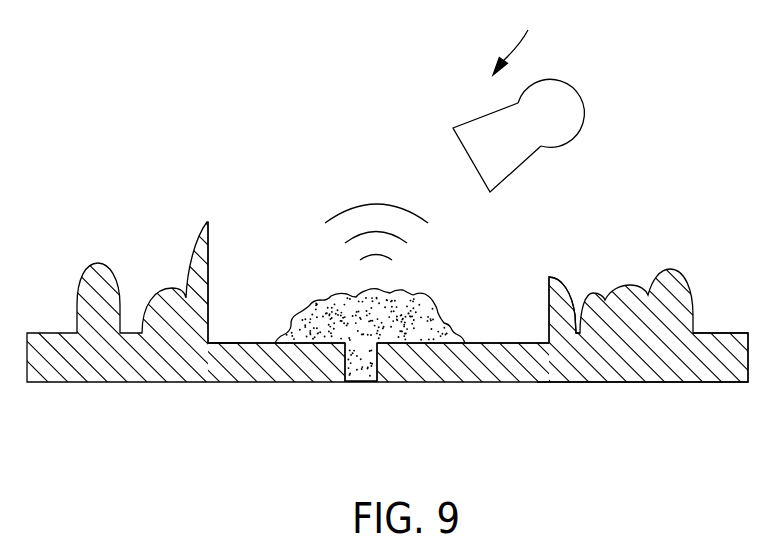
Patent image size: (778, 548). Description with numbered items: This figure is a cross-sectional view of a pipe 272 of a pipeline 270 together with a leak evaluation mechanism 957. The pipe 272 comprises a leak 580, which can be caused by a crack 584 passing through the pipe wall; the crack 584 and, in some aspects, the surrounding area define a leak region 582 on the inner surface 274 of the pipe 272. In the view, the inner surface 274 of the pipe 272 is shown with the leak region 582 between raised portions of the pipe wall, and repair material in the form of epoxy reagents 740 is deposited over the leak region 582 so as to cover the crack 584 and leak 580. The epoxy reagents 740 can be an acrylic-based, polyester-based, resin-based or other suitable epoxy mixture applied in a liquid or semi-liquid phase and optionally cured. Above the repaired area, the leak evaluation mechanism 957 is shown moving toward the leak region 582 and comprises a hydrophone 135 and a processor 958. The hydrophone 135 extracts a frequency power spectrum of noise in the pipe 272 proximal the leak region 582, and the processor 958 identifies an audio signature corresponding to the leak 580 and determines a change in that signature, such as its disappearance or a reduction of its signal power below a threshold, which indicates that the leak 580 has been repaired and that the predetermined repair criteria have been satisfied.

The pipeline 270 is at (113, 382).
The pipe 272 is at (537, 382).
The inner surface 274 is at (518, 343).
The leak region 582 is at (240, 342).
The crack 584 is at (343, 372).
The leak 580 is at (360, 373).
The epoxy reagents 740 is at (434, 305).
The hydrophone 135 is at (545, 108).
The processor 958 is at (568, 127).
The leak evaluation mechanism 957 is at (516, 38).